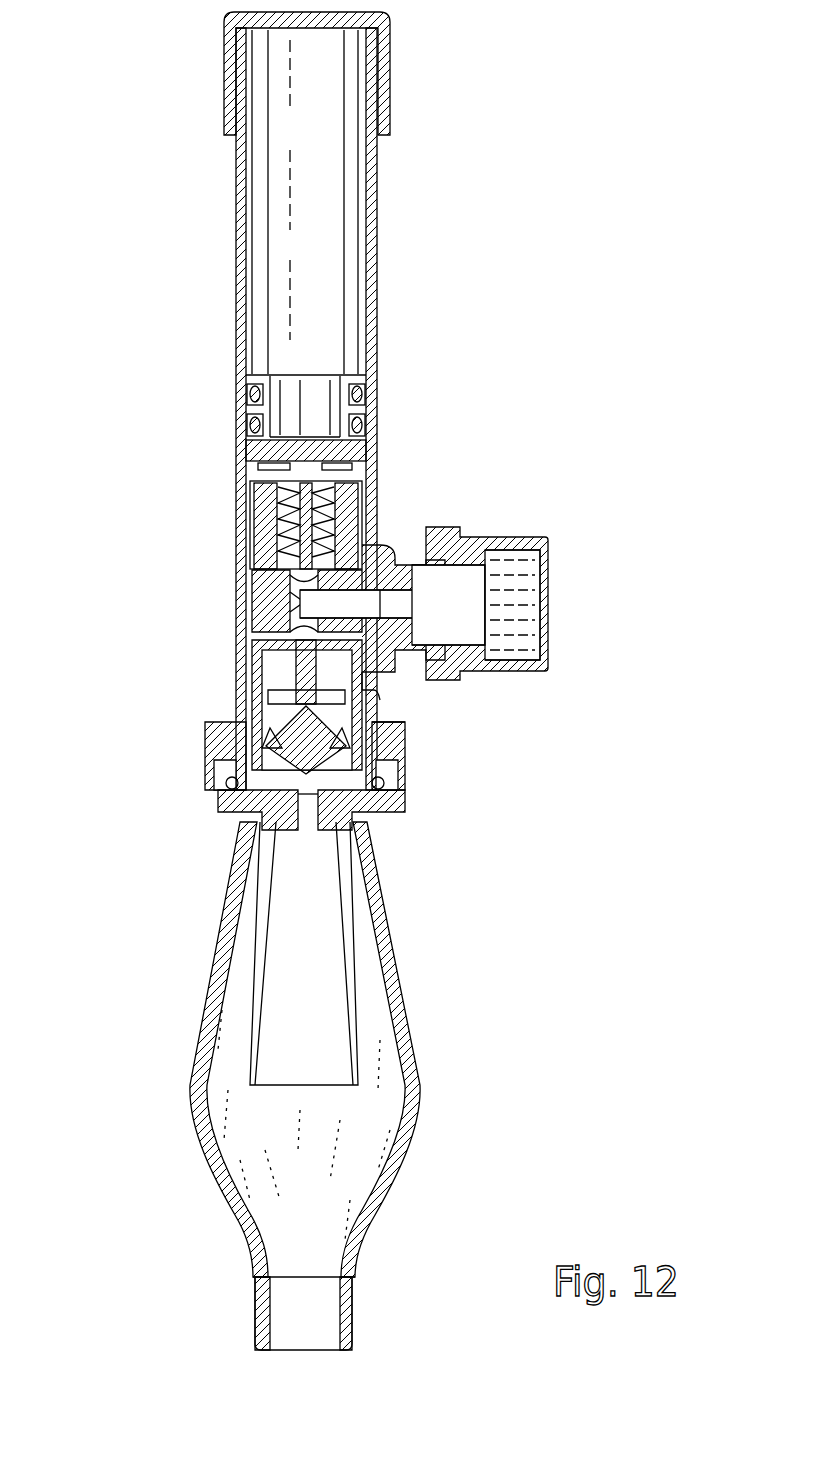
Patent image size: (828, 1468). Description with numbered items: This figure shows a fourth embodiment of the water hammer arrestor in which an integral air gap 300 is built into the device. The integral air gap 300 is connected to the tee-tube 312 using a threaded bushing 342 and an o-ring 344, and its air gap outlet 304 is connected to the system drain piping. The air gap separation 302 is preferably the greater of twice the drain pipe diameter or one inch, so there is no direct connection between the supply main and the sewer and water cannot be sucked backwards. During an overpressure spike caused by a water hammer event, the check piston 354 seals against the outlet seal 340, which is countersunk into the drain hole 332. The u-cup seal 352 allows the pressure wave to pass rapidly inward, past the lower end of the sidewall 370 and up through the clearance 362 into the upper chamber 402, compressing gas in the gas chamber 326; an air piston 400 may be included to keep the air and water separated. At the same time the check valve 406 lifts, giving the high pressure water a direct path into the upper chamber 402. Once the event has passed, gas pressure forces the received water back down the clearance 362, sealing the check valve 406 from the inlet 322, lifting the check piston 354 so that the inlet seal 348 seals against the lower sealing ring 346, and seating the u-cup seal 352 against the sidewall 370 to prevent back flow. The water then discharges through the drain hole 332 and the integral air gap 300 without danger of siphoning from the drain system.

The tee-tube 312 is at (236, 196).
The gas chamber 326 is at (300, 350).
The air piston 400 is at (362, 448).
The check valve 406 is at (380, 515).
The upper chamber 402 is at (250, 480).
The clearance 362 is at (255, 538).
The sidewall 370 is at (256, 648).
The inlet 322 is at (548, 660).
The u-cup seal 352 is at (262, 700).
The check piston 354 is at (312, 748).
The threaded bushing 342 is at (212, 748).
The outlet seal 340 is at (396, 808).
The o-ring 344 is at (228, 786).
The drain hole 332 is at (255, 822).
The air gap separation 302 is at (170, 1085).
The integral air gap 300 is at (412, 1148).
The air gap outlet 304 is at (352, 1345).
The lower sealing ring 346 is at (345, 668).
The inlet seal 348 is at (406, 722).